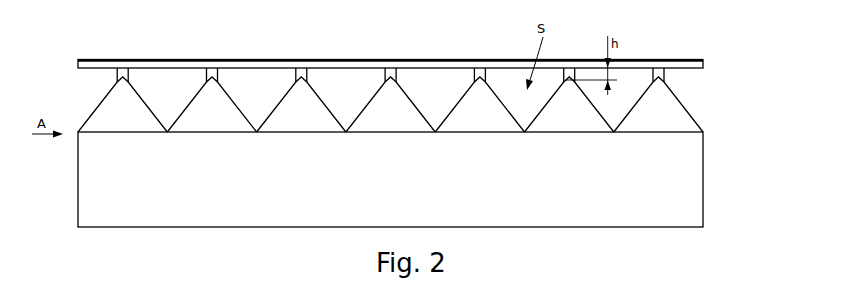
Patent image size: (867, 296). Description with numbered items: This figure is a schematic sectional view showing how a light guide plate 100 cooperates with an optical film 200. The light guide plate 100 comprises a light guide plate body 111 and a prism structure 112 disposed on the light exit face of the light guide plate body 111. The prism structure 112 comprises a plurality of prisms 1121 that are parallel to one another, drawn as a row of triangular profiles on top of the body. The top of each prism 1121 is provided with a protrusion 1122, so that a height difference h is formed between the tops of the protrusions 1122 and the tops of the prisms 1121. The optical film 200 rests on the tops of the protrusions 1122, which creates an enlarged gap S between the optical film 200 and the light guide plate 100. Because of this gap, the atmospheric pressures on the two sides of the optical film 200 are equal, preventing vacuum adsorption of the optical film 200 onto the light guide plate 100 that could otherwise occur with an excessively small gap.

The light guide plate 100 is at (435, 120).
The light guide plate body 111 is at (688, 180).
The prism structure 112 is at (413, 94).
The prism 1121 is at (391, 117).
The protrusion 1122 is at (391, 79).
The optical film 200 is at (704, 64).